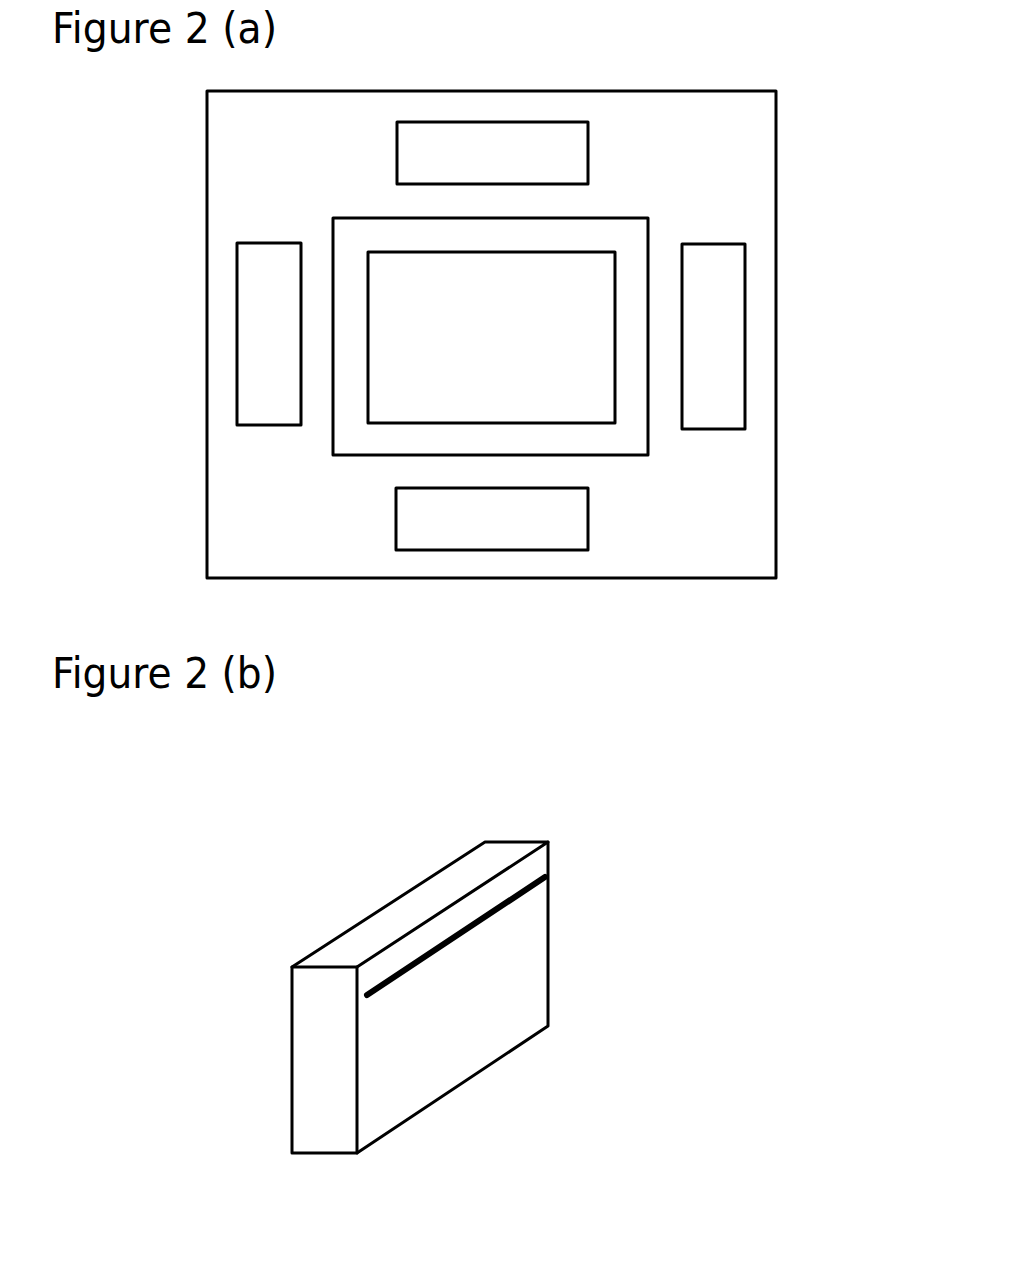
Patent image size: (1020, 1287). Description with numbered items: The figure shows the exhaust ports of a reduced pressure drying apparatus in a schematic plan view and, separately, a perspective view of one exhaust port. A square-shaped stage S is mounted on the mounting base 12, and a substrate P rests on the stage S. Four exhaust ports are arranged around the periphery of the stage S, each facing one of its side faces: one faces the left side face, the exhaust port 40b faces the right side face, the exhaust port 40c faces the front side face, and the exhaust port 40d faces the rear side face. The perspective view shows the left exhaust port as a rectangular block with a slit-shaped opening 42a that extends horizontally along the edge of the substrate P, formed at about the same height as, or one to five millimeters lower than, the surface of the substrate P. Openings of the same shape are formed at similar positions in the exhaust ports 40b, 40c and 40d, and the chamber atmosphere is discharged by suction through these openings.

The mounting base 12 is at (747, 113).
The exhaust port 40b is at (730, 340).
The exhaust port 40c is at (545, 536).
The exhaust port 40d is at (493, 138).
The slit-shaped opening 42a is at (510, 900).
The stage S is at (615, 445).
The substrate P is at (491, 337).